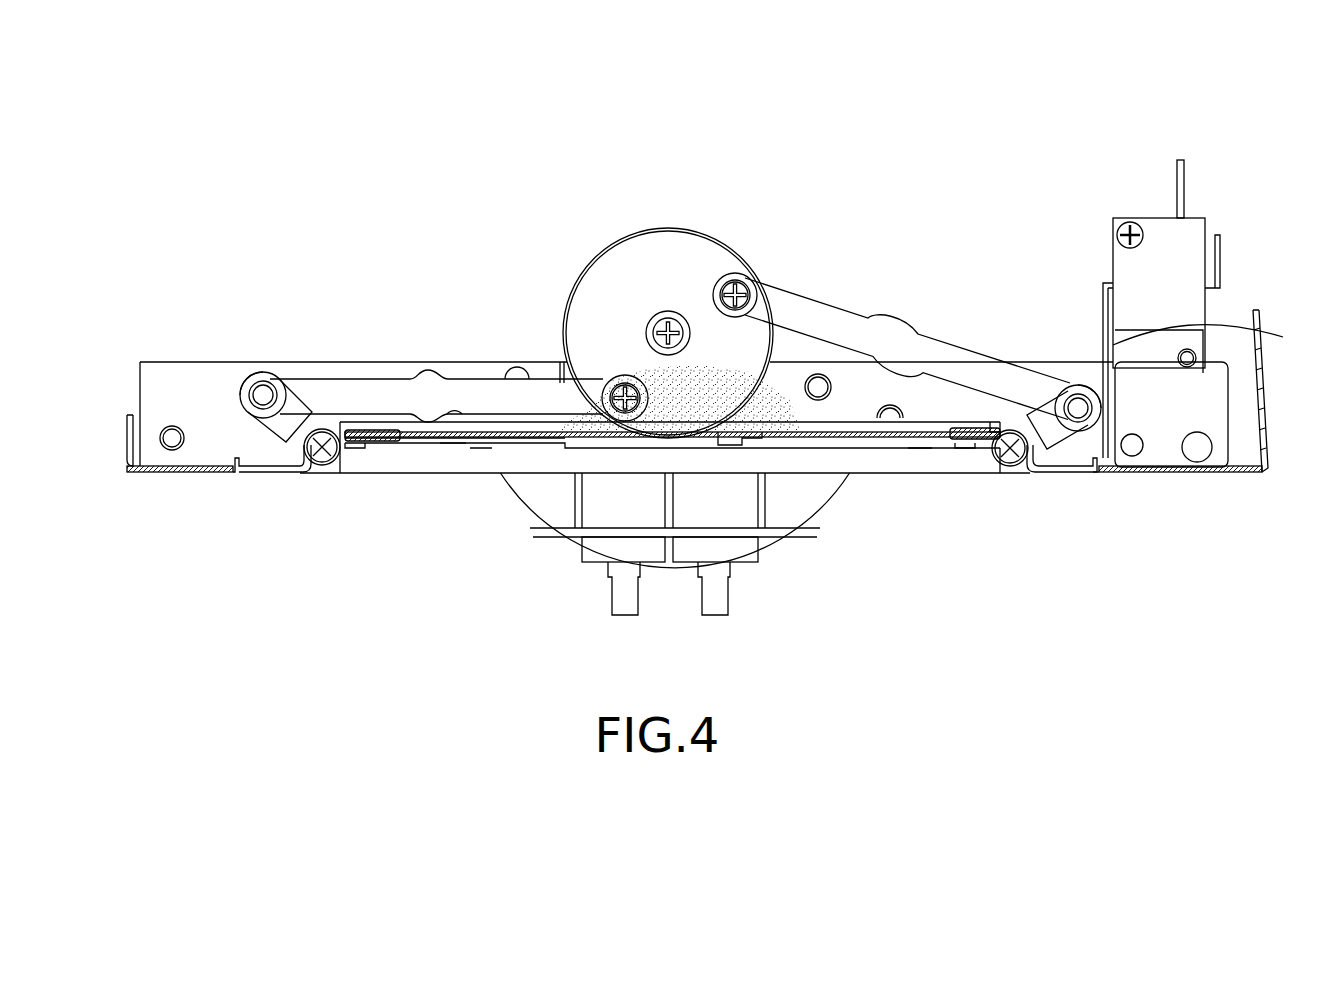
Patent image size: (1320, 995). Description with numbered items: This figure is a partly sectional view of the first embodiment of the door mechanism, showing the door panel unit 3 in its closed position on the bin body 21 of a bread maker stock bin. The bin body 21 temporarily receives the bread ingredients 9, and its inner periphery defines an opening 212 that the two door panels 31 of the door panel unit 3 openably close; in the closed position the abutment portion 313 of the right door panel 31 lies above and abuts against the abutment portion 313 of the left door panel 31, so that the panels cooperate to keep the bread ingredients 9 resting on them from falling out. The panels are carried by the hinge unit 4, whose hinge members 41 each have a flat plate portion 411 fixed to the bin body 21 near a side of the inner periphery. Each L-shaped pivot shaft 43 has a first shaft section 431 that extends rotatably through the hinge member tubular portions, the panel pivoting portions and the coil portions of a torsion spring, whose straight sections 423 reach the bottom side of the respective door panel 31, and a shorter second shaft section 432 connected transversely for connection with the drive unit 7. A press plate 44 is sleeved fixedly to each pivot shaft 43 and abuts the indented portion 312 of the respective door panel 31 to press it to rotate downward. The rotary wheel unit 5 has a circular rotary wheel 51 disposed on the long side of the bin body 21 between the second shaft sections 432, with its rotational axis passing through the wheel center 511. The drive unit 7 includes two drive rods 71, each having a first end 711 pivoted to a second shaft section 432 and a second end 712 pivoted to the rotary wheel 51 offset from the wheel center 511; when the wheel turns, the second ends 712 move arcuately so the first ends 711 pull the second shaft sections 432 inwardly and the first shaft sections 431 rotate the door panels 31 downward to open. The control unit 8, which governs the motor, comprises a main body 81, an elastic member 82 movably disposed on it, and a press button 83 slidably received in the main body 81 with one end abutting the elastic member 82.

The door panel unit 3 is at (659, 520).
The hinge unit 4 is at (1003, 490).
The rotary wheel unit 5 is at (668, 289).
The drive unit 7 is at (670, 305).
The control unit 8 is at (1183, 265).
The bread ingredients 9 is at (638, 360).
The bin body 21 is at (670, 516).
The door panel 31 is at (545, 440).
The hinge member 41 is at (240, 471).
The pivot shaft 43 is at (212, 390).
The press plate 44 is at (347, 430).
The rotary wheel 51 is at (680, 265).
The drive rod 71 is at (425, 400).
The main body 81 is at (1195, 248).
The elastic member 82 is at (1105, 302).
The press button 83 is at (1213, 337).
The opening 212 is at (451, 443).
The indented portion 312 is at (352, 449).
The abutment portion 313 is at (738, 452).
The flat plate portion 411 is at (272, 472).
The straight section 423 is at (480, 450).
The first shaft section 431 is at (322, 465).
The second shaft section 432 is at (290, 430).
The wheel center 511 is at (657, 314).
The first end 711 is at (310, 385).
The second end 712 is at (610, 384).